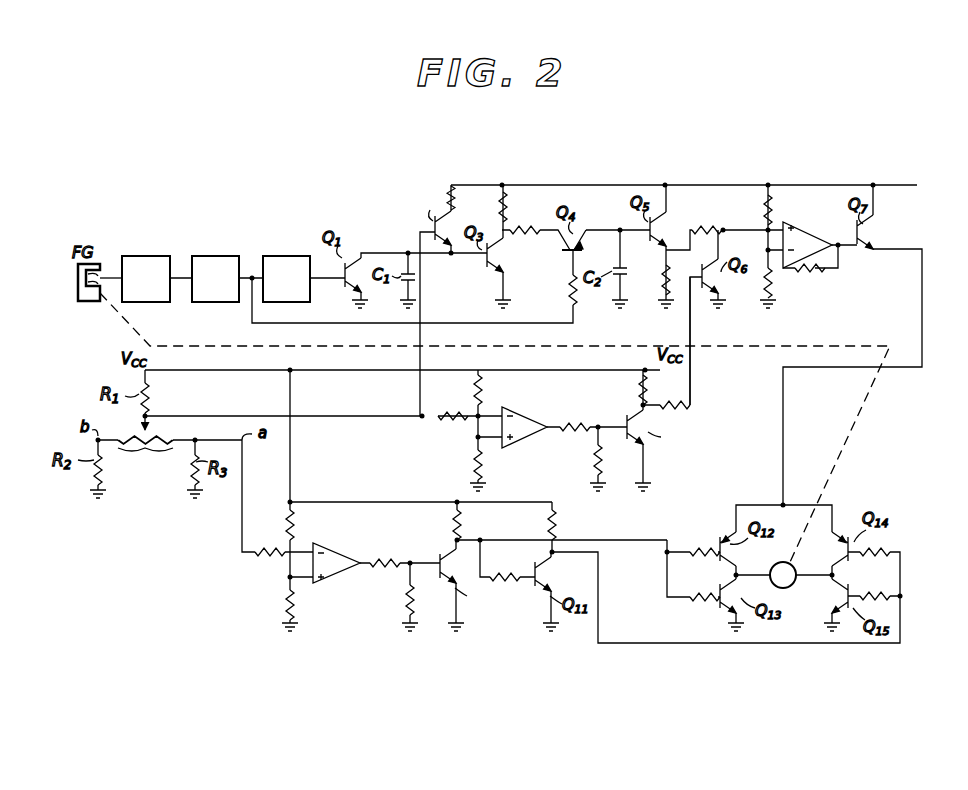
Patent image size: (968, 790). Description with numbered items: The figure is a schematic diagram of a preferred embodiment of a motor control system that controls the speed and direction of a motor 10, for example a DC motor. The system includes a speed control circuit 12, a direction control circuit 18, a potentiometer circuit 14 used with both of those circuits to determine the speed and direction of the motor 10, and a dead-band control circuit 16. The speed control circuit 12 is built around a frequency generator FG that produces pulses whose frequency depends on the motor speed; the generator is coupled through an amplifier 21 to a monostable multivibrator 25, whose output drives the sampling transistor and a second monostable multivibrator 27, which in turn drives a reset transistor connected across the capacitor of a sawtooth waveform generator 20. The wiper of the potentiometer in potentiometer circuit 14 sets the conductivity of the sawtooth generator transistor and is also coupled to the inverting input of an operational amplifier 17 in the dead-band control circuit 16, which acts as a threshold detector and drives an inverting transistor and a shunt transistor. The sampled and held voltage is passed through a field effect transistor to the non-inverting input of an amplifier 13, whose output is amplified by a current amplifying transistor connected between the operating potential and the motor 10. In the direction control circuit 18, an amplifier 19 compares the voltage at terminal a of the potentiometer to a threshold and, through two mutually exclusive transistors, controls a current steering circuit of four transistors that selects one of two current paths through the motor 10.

The motor 10 is at (794, 568).
The speed control circuit 12 is at (524, 185).
The amplifier 13 is at (786, 268).
The potentiometer circuit 14 is at (162, 432).
The dead-band control circuit 16 is at (588, 384).
The operational amplifier 17 is at (521, 448).
The direction control circuit 18 is at (413, 532).
The amplifier 19 is at (334, 584).
The sawtooth waveform generator 20 is at (406, 217).
The amplifier 21 is at (156, 258).
The monostable multivibrator 25 is at (223, 257).
The monostable multivibrator 27 is at (294, 257).